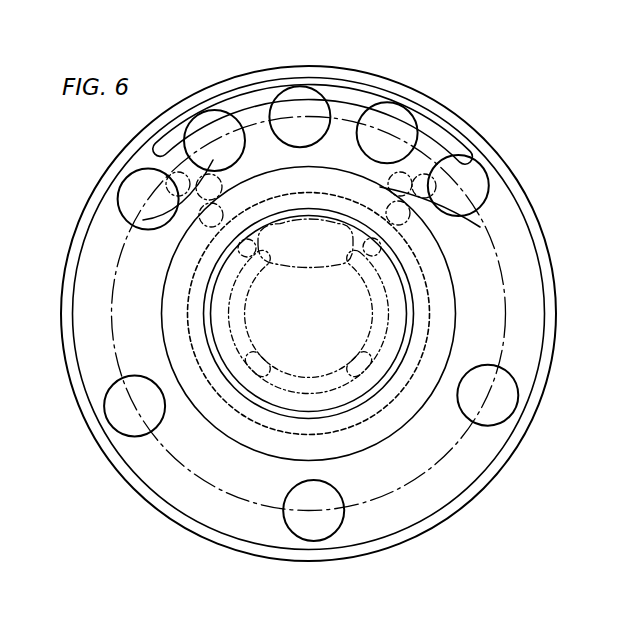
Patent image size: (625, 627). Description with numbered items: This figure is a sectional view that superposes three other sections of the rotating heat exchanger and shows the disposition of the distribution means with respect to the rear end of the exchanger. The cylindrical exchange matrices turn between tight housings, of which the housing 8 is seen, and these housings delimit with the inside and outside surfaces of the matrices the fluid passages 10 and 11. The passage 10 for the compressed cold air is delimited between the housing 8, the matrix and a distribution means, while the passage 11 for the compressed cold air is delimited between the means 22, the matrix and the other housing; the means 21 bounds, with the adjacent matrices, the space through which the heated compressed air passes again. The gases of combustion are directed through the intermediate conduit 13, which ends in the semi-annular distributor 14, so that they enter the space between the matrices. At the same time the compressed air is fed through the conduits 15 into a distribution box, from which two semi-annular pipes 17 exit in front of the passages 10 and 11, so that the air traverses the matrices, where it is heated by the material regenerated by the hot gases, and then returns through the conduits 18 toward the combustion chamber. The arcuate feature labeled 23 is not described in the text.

The housing 8 is at (542, 352).
The fluid passage 10 is at (530, 304).
The fluid passage 11 is at (252, 318).
The intermediate conduit 13 is at (455, 297).
The distribution ring 14 is at (437, 456).
The conduits 15 is at (226, 111).
The semi-annular openings 17 is at (363, 93).
The conduits 18 is at (118, 200).
The means 21 is at (442, 178).
The means 22 is at (378, 248).
The arcuate slot 23 is at (258, 147).